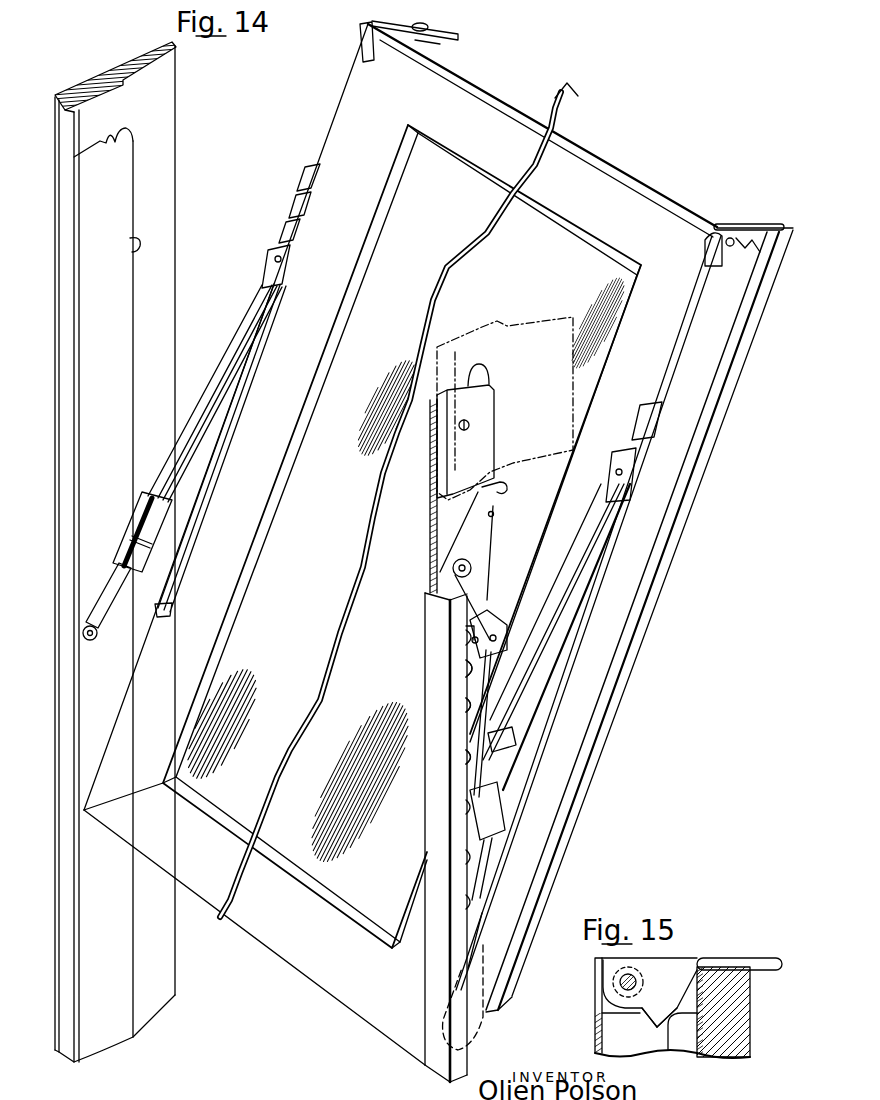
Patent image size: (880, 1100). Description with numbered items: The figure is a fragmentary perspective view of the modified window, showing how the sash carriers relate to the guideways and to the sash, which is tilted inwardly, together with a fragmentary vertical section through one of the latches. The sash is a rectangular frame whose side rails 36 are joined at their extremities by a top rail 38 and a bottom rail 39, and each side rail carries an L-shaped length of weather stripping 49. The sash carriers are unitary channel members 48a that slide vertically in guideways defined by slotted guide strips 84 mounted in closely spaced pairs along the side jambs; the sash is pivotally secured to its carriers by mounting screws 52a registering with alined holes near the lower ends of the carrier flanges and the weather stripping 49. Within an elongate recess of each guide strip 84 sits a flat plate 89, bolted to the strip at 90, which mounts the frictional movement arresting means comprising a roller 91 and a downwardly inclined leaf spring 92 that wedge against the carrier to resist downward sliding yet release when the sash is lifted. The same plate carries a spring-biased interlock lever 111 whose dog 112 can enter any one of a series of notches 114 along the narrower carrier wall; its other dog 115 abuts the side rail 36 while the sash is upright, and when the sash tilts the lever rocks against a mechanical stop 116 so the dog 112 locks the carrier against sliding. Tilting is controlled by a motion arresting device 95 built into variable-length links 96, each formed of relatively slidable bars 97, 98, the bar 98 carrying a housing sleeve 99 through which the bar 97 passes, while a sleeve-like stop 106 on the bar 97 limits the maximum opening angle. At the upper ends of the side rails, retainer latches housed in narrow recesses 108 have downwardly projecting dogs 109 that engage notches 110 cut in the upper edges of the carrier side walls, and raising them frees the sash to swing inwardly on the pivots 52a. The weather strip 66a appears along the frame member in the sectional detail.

In FIG. 14, the side rail 36 is at (137, 681).
In FIG. 15, the side rail 36 is at (740, 1010).
In FIG. 14, the top rail 38 is at (568, 99).
In FIG. 14, the bottom rail 39 is at (224, 913).
In FIG. 14, the channel member 48a is at (124, 214).
In FIG. 15, the channel member 48a is at (596, 1047).
In FIG. 14, the weather stripping 49 is at (699, 320).
In FIG. 14, the mounting screw 52a is at (480, 1021).
In FIG. 14, the weather strip 66a is at (466, 34).
In FIG. 15, the weather strip 66a is at (737, 958).
In FIG. 14, the guide strip 84 is at (85, 86).
In FIG. 14, the flat plate 89 is at (484, 430).
In FIG. 14, the bolt 90 is at (469, 422).
In FIG. 14, the roller 91 is at (474, 760).
In FIG. 14, the leaf spring 92 is at (476, 712).
In FIG. 14, the motion arresting device 95 is at (128, 521).
In FIG. 14, the link 96 is at (222, 362).
In FIG. 14, the bar 97 is at (214, 385).
In FIG. 14, the bar 98 is at (186, 460).
In FIG. 14, the housing sleeve 99 is at (126, 545).
In FIG. 14, the mechanical stop 106 is at (270, 268).
In FIG. 14, the recess 108 is at (363, 50).
In FIG. 15, the dog 109 is at (665, 1013).
In FIG. 14, the notch 110 is at (108, 150).
In FIG. 15, the notch 110 is at (647, 1020).
In FIG. 14, the interlock lever 111 is at (482, 532).
In FIG. 14, the dog 112 is at (470, 640).
In FIG. 14, the notches 114 is at (468, 676).
In FIG. 14, the dog 115 is at (135, 254).
In FIG. 14, the mechanical stop 116 is at (494, 514).